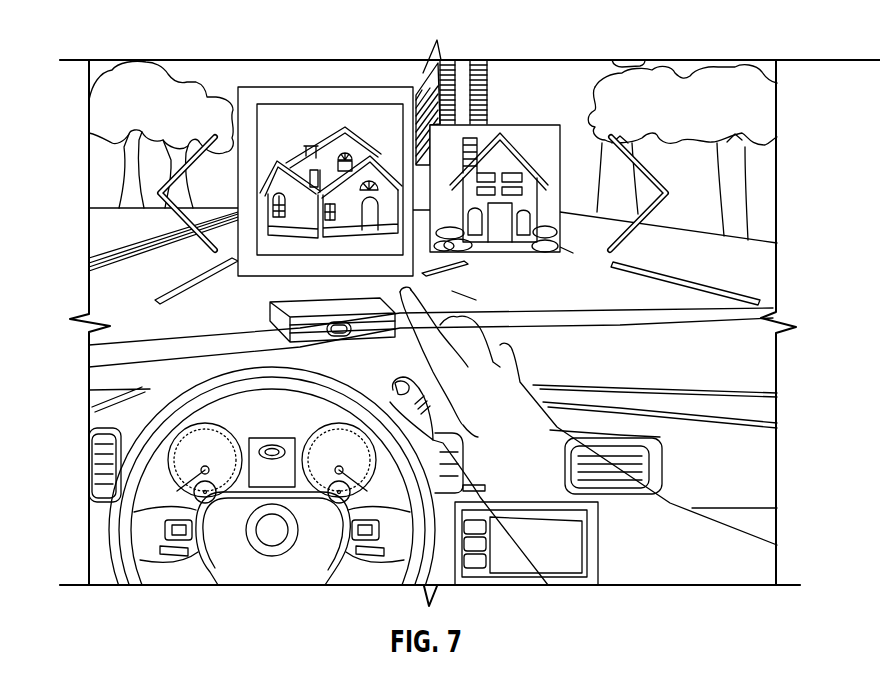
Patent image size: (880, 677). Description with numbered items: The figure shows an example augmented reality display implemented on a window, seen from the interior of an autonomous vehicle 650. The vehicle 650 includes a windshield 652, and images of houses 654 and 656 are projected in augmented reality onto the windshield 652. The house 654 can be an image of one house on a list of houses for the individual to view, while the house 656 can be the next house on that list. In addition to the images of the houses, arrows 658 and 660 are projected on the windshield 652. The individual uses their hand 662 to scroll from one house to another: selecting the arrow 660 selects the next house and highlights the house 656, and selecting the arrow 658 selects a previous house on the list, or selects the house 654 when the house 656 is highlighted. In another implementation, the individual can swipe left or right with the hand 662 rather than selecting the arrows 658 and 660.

The autonomous vehicle 650 is at (152, 59).
The windshield 652 is at (135, 286).
The house 654 is at (300, 121).
The house 656 is at (536, 143).
The arrow 658 is at (158, 194).
The arrow 660 is at (668, 195).
The hand 662 is at (672, 552).